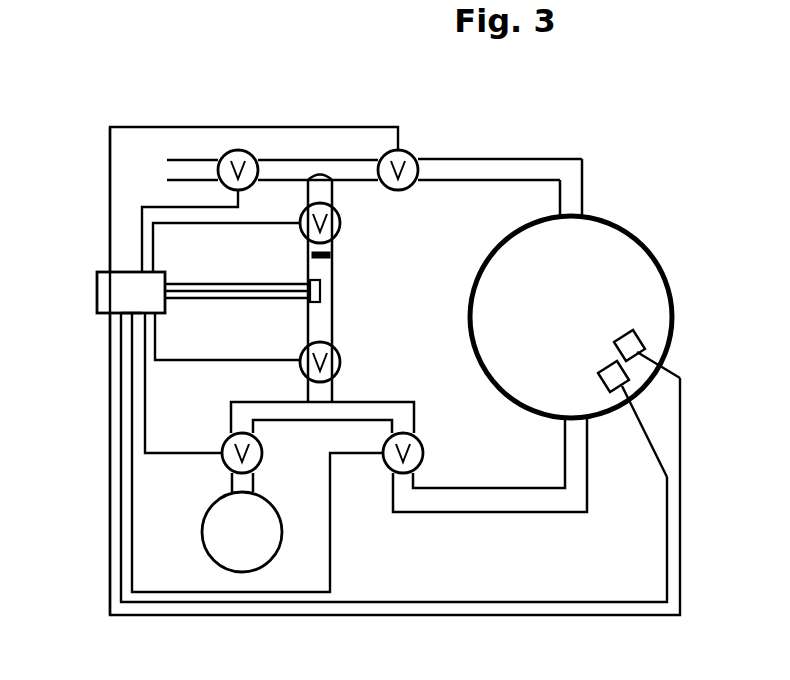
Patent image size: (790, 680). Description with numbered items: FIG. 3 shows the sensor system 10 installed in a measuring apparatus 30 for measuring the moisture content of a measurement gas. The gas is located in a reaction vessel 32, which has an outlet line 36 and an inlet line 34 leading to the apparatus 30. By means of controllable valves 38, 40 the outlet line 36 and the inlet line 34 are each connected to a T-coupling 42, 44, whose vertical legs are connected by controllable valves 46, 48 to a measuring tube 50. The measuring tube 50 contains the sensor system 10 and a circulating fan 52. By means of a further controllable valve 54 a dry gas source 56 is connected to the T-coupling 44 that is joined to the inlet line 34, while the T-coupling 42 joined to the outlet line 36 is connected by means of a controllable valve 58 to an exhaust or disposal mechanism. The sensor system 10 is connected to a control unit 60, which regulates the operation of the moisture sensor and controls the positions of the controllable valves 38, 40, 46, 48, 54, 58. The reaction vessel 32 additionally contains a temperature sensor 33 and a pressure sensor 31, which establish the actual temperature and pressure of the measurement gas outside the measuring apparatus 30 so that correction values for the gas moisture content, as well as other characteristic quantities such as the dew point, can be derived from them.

The measuring apparatus 30 is at (598, 154).
The reaction vessel 32 is at (620, 288).
The outlet line 36 is at (572, 208).
The controllable valve 38 is at (412, 158).
The controllable valve 58 is at (230, 152).
The T-coupling 42 is at (318, 176).
The controllable valve 46 is at (336, 222).
The controllable valve 48 is at (336, 360).
The circulating fan 52 is at (312, 262).
The sensor system 10 is at (322, 292).
The measuring tube 50 is at (333, 322).
The T-coupling 44 is at (320, 402).
The controllable valve 54 is at (225, 462).
The dry gas source 56 is at (215, 538).
The controllable valve 40 is at (420, 448).
The inlet line 34 is at (575, 420).
The temperature sensor 33 is at (630, 336).
The pressure sensor 31 is at (607, 388).
The control unit 60 is at (97, 283).